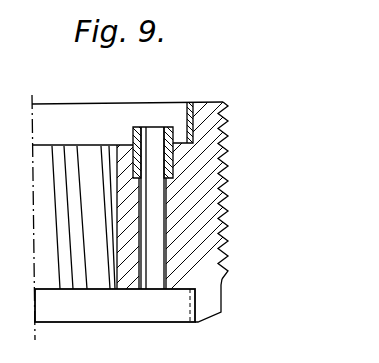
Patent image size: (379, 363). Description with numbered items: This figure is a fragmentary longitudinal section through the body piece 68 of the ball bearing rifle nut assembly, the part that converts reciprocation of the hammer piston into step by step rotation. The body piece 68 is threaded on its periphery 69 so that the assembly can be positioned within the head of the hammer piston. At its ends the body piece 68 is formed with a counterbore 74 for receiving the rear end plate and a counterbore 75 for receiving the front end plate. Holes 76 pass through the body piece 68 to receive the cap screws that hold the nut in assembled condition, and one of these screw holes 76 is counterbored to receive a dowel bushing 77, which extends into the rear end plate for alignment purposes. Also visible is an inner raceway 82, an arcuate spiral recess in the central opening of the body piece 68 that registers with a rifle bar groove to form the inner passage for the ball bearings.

The counterbore 74 is at (55, 118).
The dowel bushing 77 is at (168, 126).
The periphery 69 is at (222, 113).
The body piece 68 is at (198, 262).
The holes 76 is at (167, 283).
The inner raceway 82 is at (101, 272).
The counterbore 75 is at (133, 310).